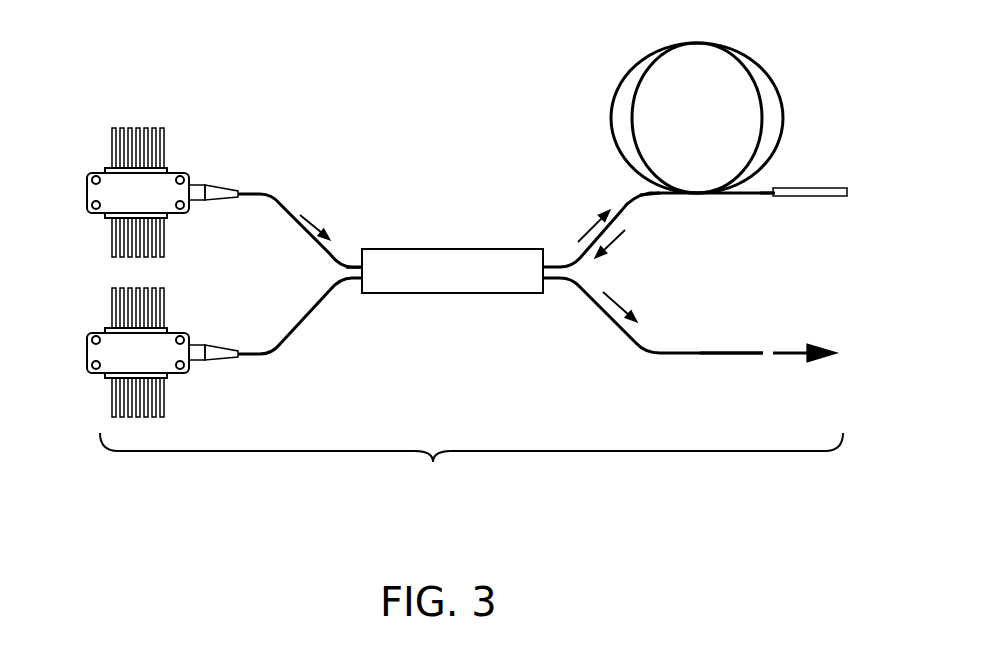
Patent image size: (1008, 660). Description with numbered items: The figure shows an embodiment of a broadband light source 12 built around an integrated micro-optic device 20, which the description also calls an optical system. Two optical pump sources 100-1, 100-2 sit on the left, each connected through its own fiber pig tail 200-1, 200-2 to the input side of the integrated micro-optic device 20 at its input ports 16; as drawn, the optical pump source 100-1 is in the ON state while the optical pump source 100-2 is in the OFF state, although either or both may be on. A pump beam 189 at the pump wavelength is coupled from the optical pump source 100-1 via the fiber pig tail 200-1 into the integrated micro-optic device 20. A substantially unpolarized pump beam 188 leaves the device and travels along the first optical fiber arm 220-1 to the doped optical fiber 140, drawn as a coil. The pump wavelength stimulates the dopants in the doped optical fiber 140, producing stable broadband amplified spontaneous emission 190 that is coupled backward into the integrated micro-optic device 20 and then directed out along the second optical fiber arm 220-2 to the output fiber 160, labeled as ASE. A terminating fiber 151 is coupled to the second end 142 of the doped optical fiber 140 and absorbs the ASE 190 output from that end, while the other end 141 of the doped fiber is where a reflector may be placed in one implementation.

The broadband light source 12 is at (471, 463).
The input ports 16 is at (390, 293).
The integrated micro-optic device 20 is at (445, 293).
The optical pump source 100-1 is at (87, 195).
The optical pump source 100-2 is at (87, 355).
The doped optical fiber 140 is at (783, 95).
The second end 141 is at (650, 208).
The second end 142 is at (780, 170).
The terminating fiber 151 is at (833, 188).
The output fiber 160 is at (723, 354).
The substantially unpolarized pump beam 188 is at (588, 229).
The pump beam 189 is at (313, 222).
The broadband amplified spontaneous emission 190 is at (622, 238).
The fiber pig tail 200-1 is at (258, 194).
The fiber pig tail 200-2 is at (262, 353).
The first optical fiber arm 220-1 is at (632, 200).
The second optical fiber arm 220-2 is at (620, 327).